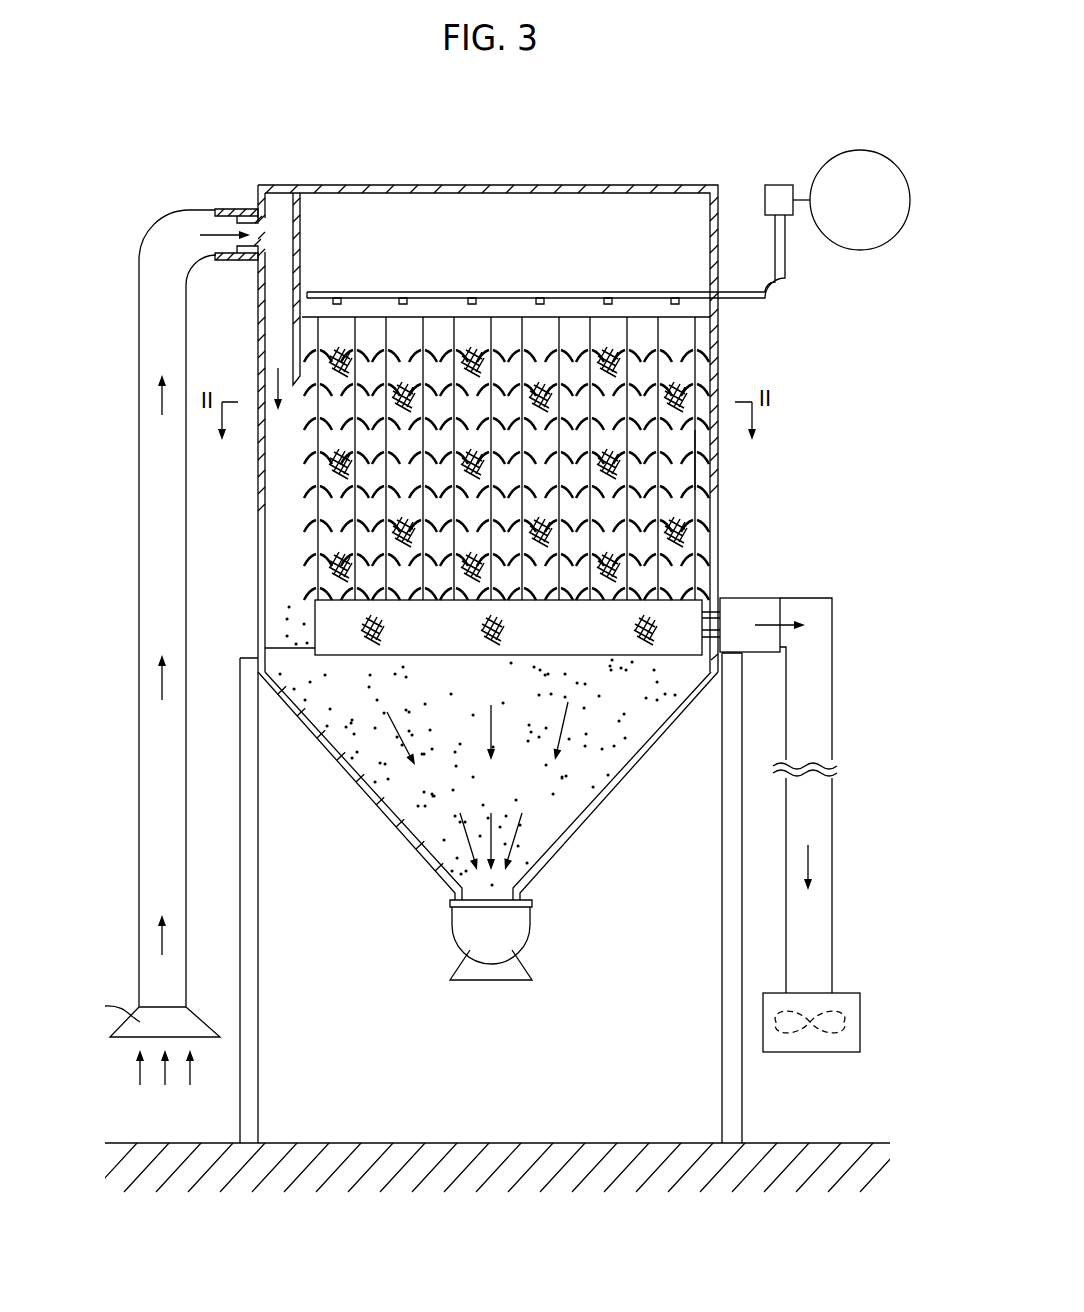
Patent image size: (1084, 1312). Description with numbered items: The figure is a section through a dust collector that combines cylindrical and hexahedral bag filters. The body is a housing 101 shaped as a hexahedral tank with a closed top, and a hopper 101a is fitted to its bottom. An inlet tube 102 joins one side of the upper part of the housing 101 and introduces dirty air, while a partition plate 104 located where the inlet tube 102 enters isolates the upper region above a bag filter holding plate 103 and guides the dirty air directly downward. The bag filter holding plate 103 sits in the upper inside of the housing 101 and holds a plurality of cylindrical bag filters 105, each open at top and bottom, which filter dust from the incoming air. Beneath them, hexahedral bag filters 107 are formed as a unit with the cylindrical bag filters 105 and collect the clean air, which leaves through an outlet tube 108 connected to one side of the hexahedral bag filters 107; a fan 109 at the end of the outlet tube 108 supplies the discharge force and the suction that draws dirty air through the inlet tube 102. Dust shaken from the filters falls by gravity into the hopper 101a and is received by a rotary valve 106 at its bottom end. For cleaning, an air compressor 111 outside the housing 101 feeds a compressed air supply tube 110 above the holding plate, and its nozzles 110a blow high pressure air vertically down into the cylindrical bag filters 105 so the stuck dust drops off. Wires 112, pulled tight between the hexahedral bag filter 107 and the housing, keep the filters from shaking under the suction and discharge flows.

The housing 101 is at (720, 505).
The hopper 101a is at (390, 812).
The inlet tube 102 is at (152, 828).
The bag filter holding plate 103 is at (508, 317).
The partition plate 104 is at (307, 222).
The cylindrical bag filters 105 is at (696, 462).
The rotary valve 106 is at (517, 925).
The hexahedral bag filters 107 is at (570, 645).
The outlet tube 108 is at (825, 683).
The fan 109 is at (845, 1022).
The compressed air supply tube 110 is at (638, 292).
The nozzles 110a is at (677, 305).
The air compressor 111 is at (862, 235).
The wires 112 is at (273, 645).